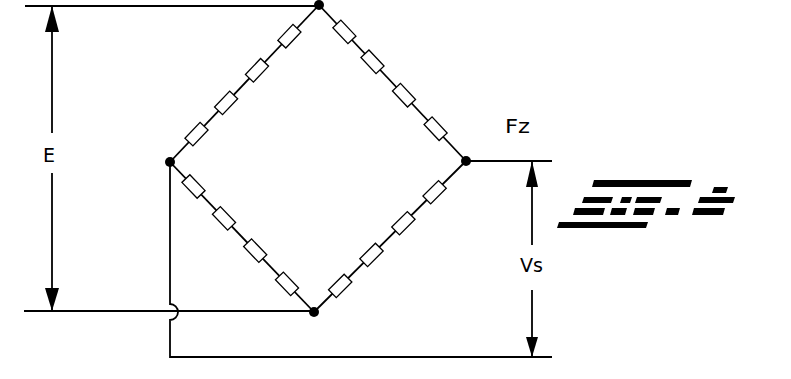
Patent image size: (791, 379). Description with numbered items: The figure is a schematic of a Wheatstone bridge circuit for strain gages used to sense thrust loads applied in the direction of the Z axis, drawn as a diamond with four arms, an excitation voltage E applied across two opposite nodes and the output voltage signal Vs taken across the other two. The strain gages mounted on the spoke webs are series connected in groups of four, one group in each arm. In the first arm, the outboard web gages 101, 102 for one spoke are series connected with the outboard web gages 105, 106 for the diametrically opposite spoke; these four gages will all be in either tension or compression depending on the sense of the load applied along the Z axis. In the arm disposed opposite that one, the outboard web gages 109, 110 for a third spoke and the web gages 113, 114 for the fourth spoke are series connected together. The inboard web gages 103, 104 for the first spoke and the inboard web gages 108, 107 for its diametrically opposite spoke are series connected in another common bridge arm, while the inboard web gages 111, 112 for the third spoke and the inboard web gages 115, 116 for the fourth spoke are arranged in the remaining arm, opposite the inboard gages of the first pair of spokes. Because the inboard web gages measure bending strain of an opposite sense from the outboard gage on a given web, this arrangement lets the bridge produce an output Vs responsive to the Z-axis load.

The outboard web gage 101 is at (278, 31).
The outboard web gage 102 is at (243, 65).
The inboard web gage 103 is at (357, 24).
The inboard web gage 104 is at (387, 57).
The outboard web gage 105 is at (210, 98).
The outboard web gage 106 is at (177, 130).
The inboard web gage 107 is at (452, 127).
The inboard web gage 108 is at (420, 91).
The outboard web gage 109 is at (449, 198).
The outboard web gage 110 is at (416, 225).
The inboard web gage 111 is at (191, 195).
The inboard web gage 112 is at (215, 224).
The web gage 113 is at (383, 261).
The web gage 114 is at (350, 293).
The inboard web gage 115 is at (278, 289).
The inboard web gage 116 is at (246, 256).